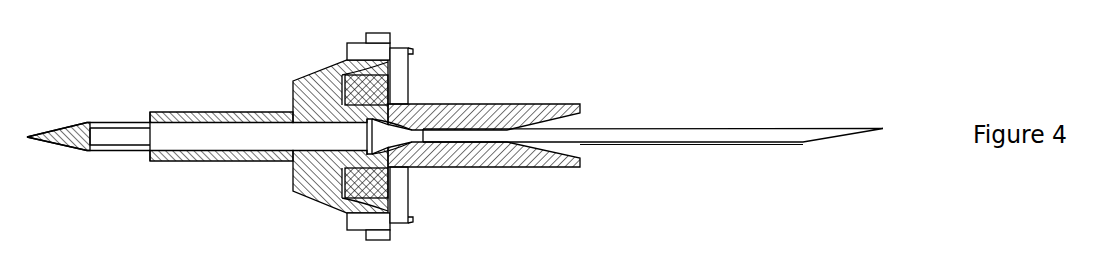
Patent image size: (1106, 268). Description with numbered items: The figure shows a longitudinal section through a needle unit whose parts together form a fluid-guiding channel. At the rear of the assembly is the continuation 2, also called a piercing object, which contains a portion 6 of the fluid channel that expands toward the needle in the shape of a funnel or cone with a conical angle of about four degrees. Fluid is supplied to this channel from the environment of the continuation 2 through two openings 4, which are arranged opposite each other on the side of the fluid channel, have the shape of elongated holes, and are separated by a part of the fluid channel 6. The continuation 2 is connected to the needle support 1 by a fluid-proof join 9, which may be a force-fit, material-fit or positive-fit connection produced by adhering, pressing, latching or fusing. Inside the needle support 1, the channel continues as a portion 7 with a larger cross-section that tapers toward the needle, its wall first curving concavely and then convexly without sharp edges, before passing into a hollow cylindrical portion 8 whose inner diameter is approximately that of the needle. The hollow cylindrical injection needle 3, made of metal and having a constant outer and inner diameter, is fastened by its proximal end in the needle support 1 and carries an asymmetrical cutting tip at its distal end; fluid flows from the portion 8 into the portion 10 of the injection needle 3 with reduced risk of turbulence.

The needle support 1 is at (489, 175).
The continuation 2 is at (254, 170).
The injection needle 3 is at (653, 128).
The opening 4 is at (122, 127).
The portion of the fluid-guiding channel 6 is at (217, 138).
The portion of the fluid-guiding channel 7 is at (377, 135).
The portion of the fluid channel 8 is at (423, 130).
The join 9 is at (363, 155).
The portion of the injection needle 10 is at (677, 136).